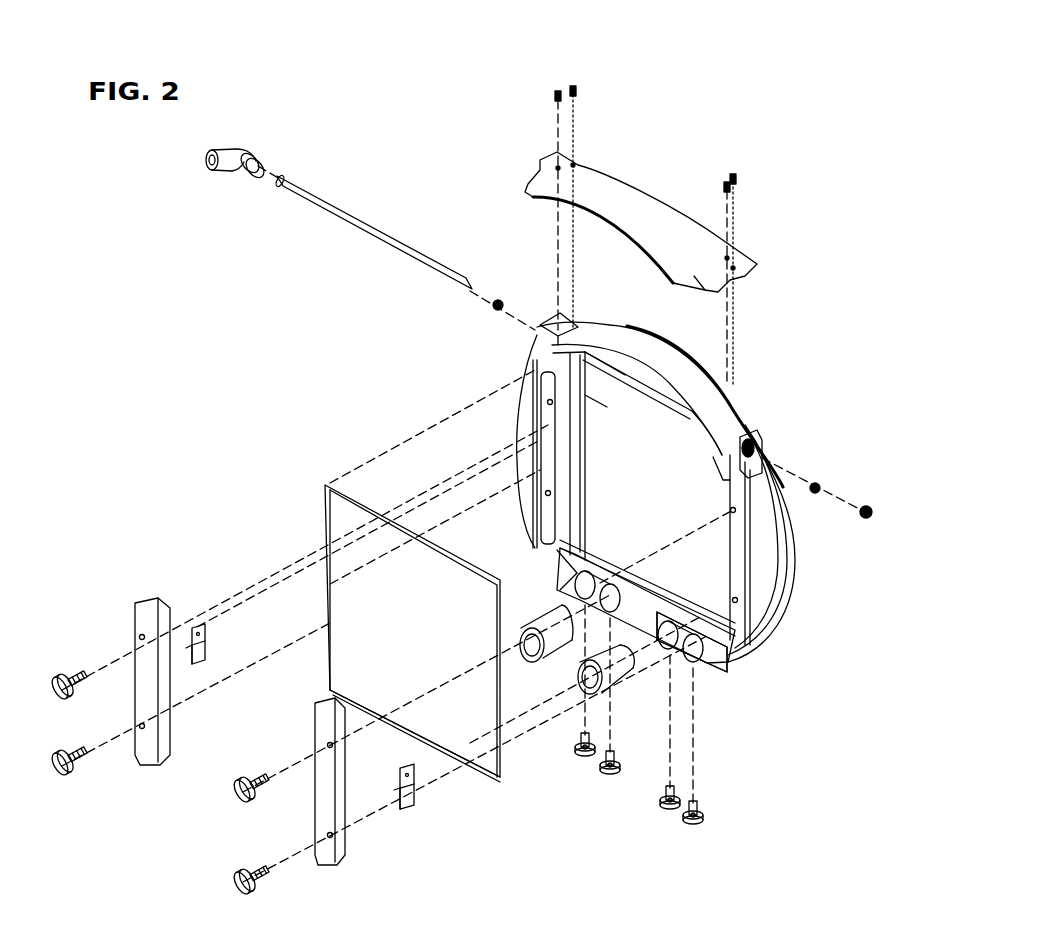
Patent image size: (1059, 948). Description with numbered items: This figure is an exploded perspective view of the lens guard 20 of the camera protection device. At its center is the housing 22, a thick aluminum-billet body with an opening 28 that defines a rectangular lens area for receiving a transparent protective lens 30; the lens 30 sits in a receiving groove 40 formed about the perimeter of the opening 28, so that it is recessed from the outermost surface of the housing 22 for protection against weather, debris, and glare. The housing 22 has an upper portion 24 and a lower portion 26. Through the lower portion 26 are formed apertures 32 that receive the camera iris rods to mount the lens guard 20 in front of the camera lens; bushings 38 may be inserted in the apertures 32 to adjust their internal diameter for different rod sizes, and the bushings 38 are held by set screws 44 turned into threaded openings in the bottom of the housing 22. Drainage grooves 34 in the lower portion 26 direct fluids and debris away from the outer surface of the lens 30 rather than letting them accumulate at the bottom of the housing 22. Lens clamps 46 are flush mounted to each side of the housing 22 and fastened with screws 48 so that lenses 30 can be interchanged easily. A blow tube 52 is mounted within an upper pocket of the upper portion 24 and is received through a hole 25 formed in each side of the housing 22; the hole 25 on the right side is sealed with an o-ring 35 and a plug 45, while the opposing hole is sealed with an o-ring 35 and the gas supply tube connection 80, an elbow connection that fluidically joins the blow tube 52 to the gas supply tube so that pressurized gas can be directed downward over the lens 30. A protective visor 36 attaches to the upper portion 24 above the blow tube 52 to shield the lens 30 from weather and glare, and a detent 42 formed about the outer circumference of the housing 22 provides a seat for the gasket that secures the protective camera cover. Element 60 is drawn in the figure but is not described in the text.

The lens guard 20 is at (695, 82).
The housing 22 is at (790, 607).
The upper portion 24 is at (648, 322).
The hole 25 is at (752, 445).
The lower portion 26 is at (557, 553).
The opening 28 is at (607, 430).
The protective lens 30 is at (515, 765).
The apertures 32 is at (700, 660).
The drainage grooves 34 is at (612, 585).
The o-ring 35 is at (497, 300).
The protective visor 36 is at (757, 265).
The bushings 38 is at (555, 627).
The receiving groove 40 is at (625, 408).
The detent 42 is at (680, 356).
The set screws 44 is at (700, 817).
The plug 45 is at (866, 505).
The lens clamps 46 is at (345, 852).
The screws 48 is at (255, 890).
The blow tube 52 is at (357, 215).
The clip 60 is at (415, 800).
The gas supply tube connection 80 is at (224, 168).